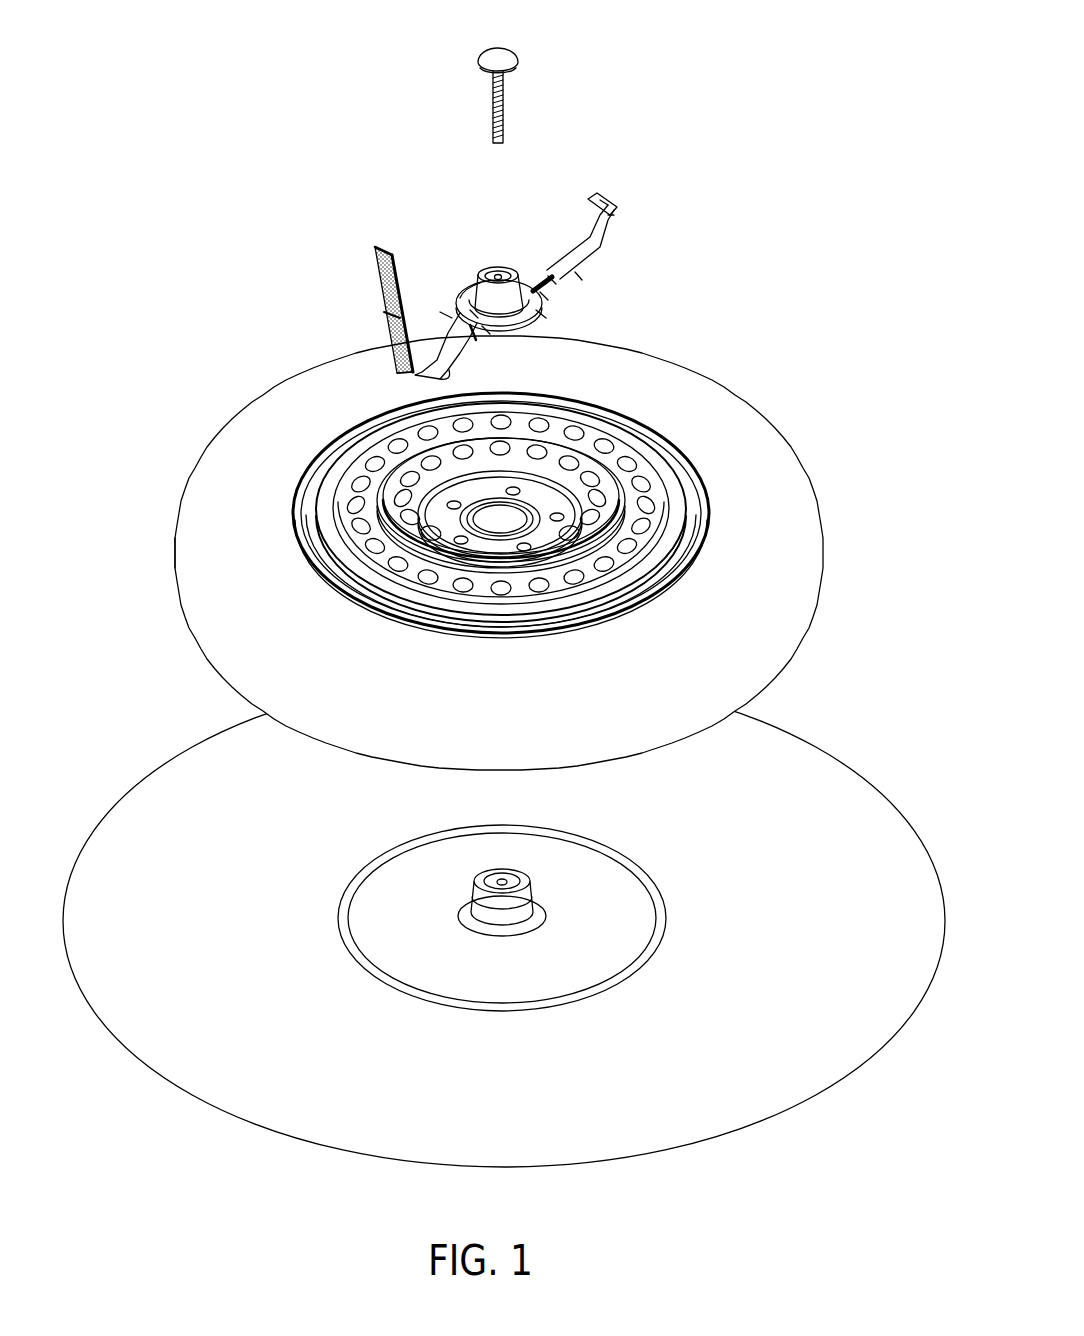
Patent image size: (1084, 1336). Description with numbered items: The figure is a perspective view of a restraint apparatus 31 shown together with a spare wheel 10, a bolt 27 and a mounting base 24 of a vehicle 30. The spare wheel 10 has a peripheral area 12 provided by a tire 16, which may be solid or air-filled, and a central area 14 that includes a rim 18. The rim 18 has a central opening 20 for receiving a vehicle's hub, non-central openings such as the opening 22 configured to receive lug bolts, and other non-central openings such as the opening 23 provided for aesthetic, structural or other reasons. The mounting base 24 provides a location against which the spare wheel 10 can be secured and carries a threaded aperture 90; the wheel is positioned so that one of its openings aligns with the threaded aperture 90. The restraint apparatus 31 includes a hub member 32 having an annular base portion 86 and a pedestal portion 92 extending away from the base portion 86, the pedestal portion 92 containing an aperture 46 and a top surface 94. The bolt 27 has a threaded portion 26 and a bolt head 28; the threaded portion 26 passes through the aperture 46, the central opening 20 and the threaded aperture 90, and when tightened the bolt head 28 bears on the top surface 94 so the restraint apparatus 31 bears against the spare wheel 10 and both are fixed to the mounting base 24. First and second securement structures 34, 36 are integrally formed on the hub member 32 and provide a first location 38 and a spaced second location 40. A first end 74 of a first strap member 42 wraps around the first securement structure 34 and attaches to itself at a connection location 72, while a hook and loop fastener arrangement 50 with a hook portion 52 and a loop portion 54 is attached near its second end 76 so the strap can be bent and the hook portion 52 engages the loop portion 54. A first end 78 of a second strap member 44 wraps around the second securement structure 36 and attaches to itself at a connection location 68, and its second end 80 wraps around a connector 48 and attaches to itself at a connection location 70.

The spare wheel 10 is at (510, 605).
The peripheral area 12 is at (468, 553).
The central area 14 is at (488, 528).
The tire 16 is at (144, 556).
The rim 18 is at (390, 614).
The central opening 20 is at (500, 552).
The non-central opening 22 is at (466, 556).
The non-central opening 23 is at (588, 450).
The mounting base 24 is at (452, 915).
The threaded portion 26 is at (503, 118).
The bolt 27 is at (465, 71).
The bolt head 28 is at (497, 57).
The vehicle 30 is at (504, 917).
The restraint apparatus 31 is at (494, 255).
The hub member 32 is at (494, 274).
The first securement structure 34 is at (535, 355).
The second securement structure 36 is at (599, 319).
The first location 38 is at (427, 293).
The second location 40 is at (505, 250).
The first strap member 42 is at (378, 284).
The second strap member 44 is at (628, 220).
The aperture 46 is at (498, 272).
The connector 48 is at (597, 196).
The hook and loop fastener arrangement 50 is at (339, 279).
The hook portion 52 is at (372, 268).
The loop portion 54 is at (388, 356).
The connection location 68 is at (543, 277).
The connection location 70 is at (612, 222).
The connection location 72 is at (470, 333).
The first end 74 is at (388, 321).
The second end 76 is at (329, 210).
The first end 78 is at (632, 280).
The second end 80 is at (662, 183).
The base portion 86 is at (588, 345).
The threaded aperture 90 is at (497, 879).
The pedestal portion 92 is at (422, 267).
The top surface 94 is at (482, 267).